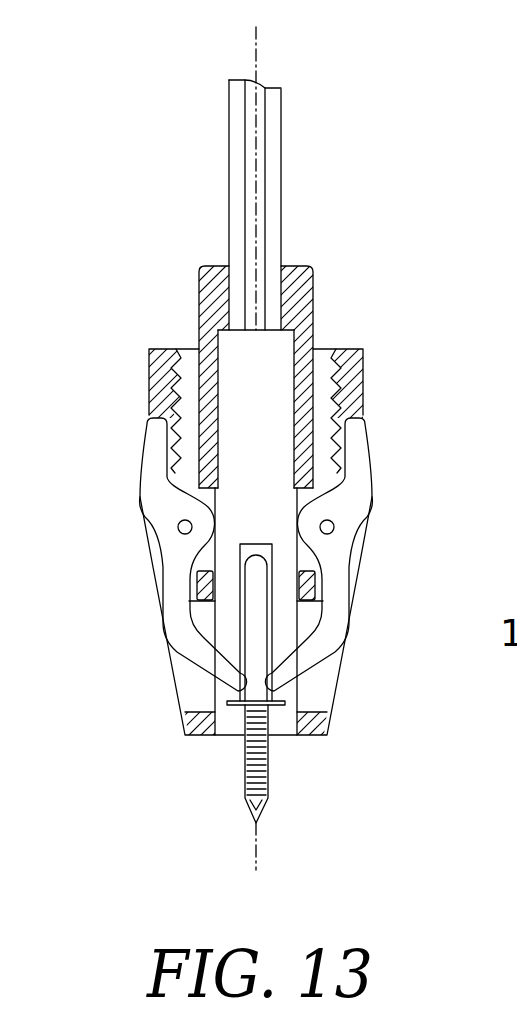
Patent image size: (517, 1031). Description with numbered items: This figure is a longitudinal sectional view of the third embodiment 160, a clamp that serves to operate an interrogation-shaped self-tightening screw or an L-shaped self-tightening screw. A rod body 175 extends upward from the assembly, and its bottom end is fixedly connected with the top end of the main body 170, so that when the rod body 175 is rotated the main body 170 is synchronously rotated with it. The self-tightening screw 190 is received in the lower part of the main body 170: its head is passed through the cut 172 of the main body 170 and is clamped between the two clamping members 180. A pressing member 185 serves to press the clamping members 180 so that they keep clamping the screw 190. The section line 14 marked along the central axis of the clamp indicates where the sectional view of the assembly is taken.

The section line 14- 14 is at (271, 27).
The third embodiment 160 is at (332, 164).
The main body 170 is at (363, 545).
The cut 172 is at (245, 648).
The rod body 175 is at (260, 123).
The clamping members 180 is at (182, 590).
The threaded nut 185 is at (353, 379).
The self-tightening screw 190 is at (260, 626).